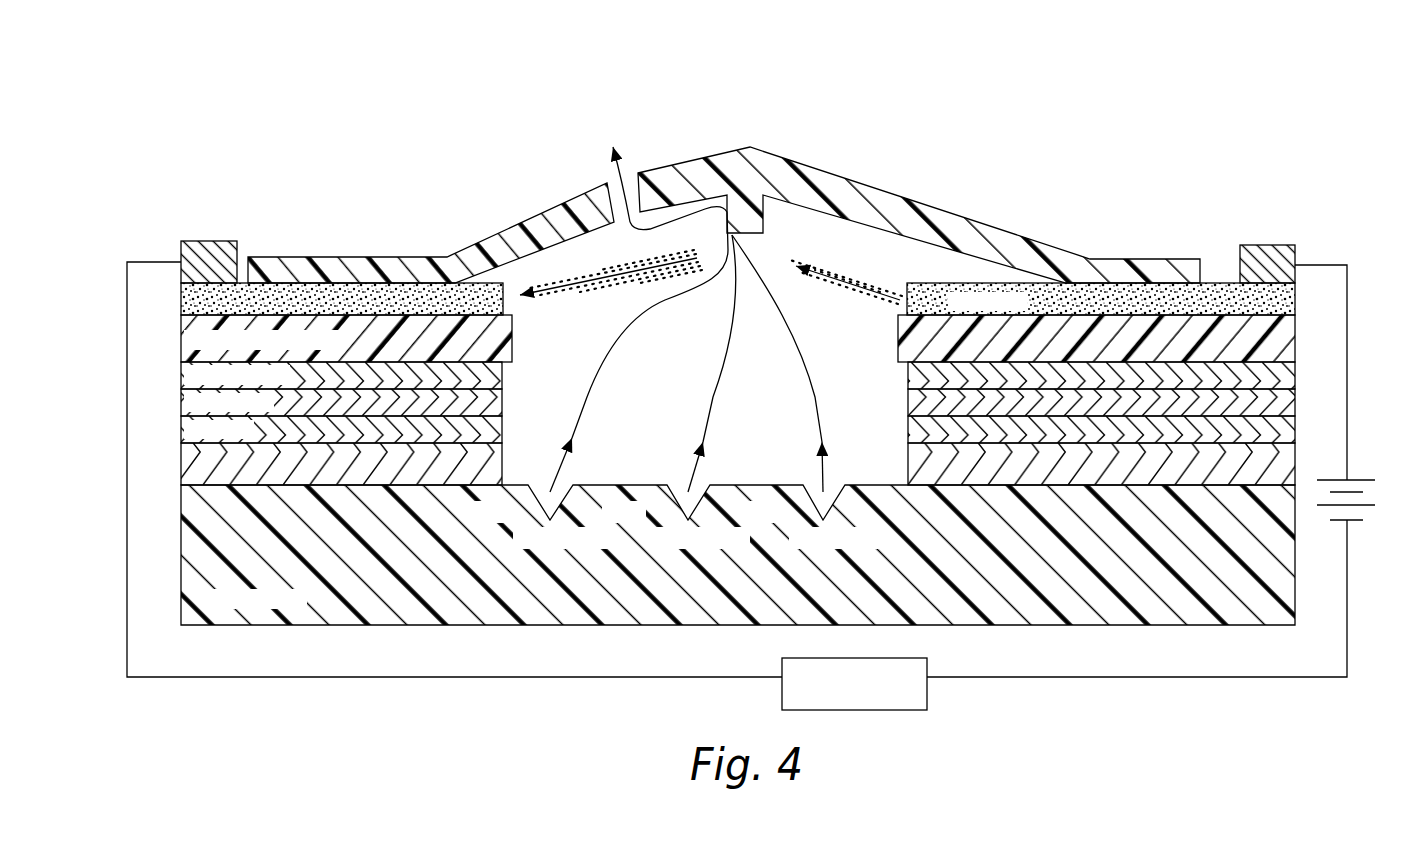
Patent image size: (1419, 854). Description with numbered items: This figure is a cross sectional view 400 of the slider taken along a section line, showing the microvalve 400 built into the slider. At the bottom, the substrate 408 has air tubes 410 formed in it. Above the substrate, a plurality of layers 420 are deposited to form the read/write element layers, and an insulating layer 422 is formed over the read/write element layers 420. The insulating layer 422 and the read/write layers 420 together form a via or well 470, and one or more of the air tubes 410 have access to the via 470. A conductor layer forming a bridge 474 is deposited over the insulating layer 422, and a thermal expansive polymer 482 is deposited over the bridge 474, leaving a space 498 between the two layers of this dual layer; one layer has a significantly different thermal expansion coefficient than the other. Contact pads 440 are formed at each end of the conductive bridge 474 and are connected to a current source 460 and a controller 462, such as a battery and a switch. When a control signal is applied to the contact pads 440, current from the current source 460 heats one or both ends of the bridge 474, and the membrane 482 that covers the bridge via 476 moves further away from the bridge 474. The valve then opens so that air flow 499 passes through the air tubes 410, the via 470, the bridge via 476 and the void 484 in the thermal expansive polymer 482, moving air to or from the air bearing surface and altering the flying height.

The microvalve 400 is at (787, 90).
The substrate 408 is at (390, 626).
The air tubes 410 is at (540, 497).
The read/write element layers 420 is at (175, 362).
The insulating layer 422 is at (182, 343).
The contact pads 440 is at (240, 249).
The current source 460 is at (1356, 522).
The controller 462 is at (907, 710).
The via 470 is at (866, 402).
The bridge 474 is at (181, 298).
The bridge via 476 is at (755, 252).
The thermal expansive polymer 482 is at (363, 257).
The void 484 is at (623, 172).
The space 498 is at (913, 255).
The air flow 499 is at (619, 331).